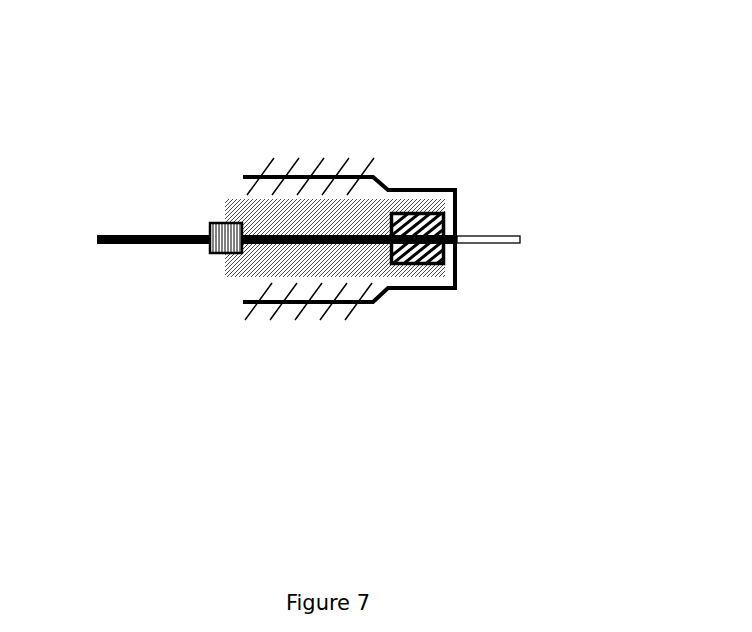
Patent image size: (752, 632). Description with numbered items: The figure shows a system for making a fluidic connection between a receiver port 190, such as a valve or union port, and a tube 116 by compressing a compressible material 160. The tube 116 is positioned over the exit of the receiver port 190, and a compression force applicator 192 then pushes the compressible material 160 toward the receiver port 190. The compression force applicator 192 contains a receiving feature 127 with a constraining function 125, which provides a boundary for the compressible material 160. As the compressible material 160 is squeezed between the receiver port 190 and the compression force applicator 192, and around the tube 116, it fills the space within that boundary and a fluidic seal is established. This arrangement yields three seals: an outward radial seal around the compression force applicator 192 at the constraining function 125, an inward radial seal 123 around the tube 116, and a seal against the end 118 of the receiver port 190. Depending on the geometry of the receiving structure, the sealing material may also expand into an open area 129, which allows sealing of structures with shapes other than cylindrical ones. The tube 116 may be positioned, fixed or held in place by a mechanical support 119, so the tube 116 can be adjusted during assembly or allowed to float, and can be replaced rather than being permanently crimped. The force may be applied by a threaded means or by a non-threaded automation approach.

The tube 116 is at (256, 175).
The mechanical support 119 is at (202, 143).
The compression force applicator 192 is at (247, 304).
The receiving feature 127 is at (362, 153).
The open area 129 is at (425, 201).
The receiver port 190 is at (298, 309).
The constraining function 125 is at (448, 149).
The compressible material 160 is at (422, 125).
The inward radial seal 123 is at (402, 346).
The end of the receiver port 118 is at (459, 322).